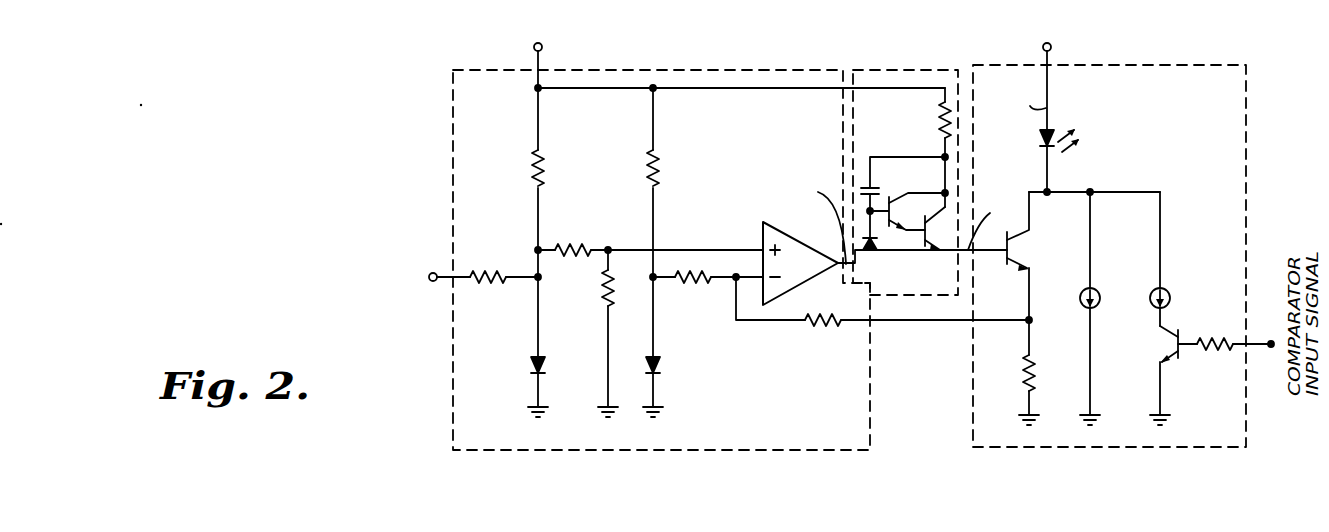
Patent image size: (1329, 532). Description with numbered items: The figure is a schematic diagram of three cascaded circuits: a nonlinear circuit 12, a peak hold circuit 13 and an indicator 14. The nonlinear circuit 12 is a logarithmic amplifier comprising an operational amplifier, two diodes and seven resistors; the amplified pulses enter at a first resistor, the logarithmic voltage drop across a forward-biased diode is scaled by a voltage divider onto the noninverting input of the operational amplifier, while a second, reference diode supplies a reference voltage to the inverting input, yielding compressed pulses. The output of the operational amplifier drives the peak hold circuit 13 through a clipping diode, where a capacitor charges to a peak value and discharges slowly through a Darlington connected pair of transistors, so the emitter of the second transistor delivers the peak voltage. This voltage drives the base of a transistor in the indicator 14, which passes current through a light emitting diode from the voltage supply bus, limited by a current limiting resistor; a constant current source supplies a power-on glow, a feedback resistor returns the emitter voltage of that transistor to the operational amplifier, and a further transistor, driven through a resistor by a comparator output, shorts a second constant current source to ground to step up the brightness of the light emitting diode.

The nonlinear circuit 12 is at (428, 110).
The peak hold circuit 13 is at (878, 68).
The indicator 14 is at (1114, 65).